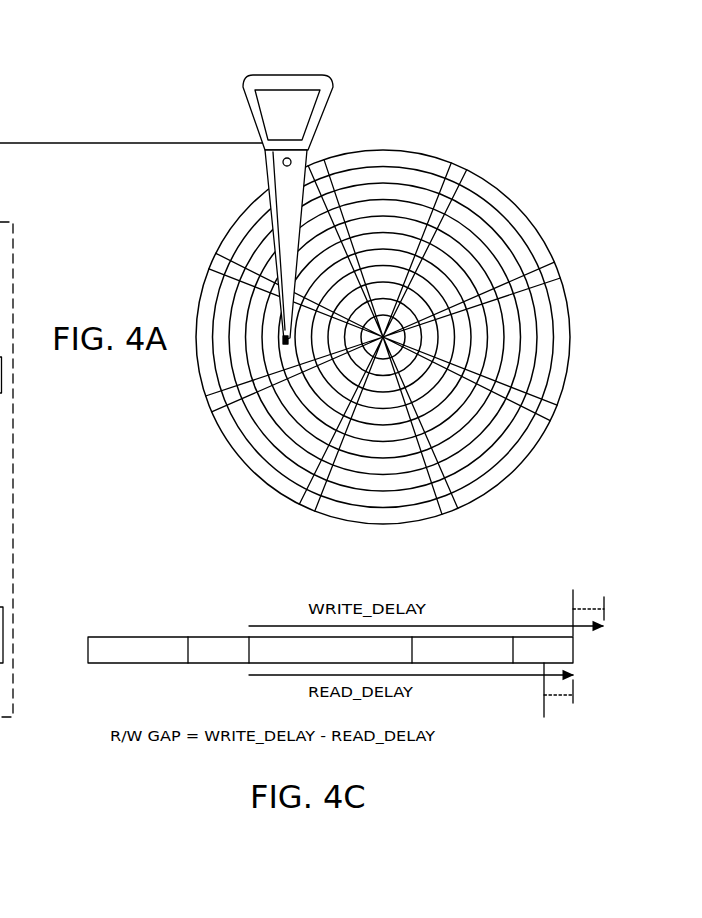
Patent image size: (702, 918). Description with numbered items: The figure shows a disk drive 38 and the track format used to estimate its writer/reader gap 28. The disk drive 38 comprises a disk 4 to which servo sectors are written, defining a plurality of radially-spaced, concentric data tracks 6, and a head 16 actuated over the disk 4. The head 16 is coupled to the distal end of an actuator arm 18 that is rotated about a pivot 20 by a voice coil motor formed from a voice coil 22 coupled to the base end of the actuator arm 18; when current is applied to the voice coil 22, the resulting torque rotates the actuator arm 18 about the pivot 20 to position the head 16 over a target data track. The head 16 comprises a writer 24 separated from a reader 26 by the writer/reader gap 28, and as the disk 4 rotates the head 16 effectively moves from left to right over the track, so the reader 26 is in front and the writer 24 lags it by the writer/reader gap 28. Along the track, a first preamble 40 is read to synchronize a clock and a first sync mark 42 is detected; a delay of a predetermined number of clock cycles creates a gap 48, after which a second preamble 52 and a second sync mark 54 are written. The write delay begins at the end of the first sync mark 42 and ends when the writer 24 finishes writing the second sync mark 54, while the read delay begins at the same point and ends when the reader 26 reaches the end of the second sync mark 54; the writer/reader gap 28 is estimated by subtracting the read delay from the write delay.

In FIG. 4A, the disk drive 38 is at (479, 99).
In FIG. 4A, the disk 4 is at (491, 177).
In FIG. 4A, the data track 6 is at (384, 500).
In FIG. 4A, the voice coil 22 is at (244, 100).
In FIG. 4A, the actuator arm 18 is at (266, 178).
In FIG. 4A, the pivot 20 is at (287, 166).
In FIG. 4A, the head 16 is at (284, 348).
In FIG. 4C, the first preamble 40 is at (143, 637).
In FIG. 4C, the first sync mark 42 is at (218, 637).
In FIG. 4C, the gap 48 is at (271, 641).
In FIG. 4C, the second preamble 52 is at (468, 637).
In FIG. 4C, the second sync mark 54 is at (536, 637).
In FIG. 4C, the writer 24 is at (573, 592).
In FIG. 4C, the reader 26 is at (606, 598).
In FIG. 4C, the writer/reader gap 28 is at (589, 606).